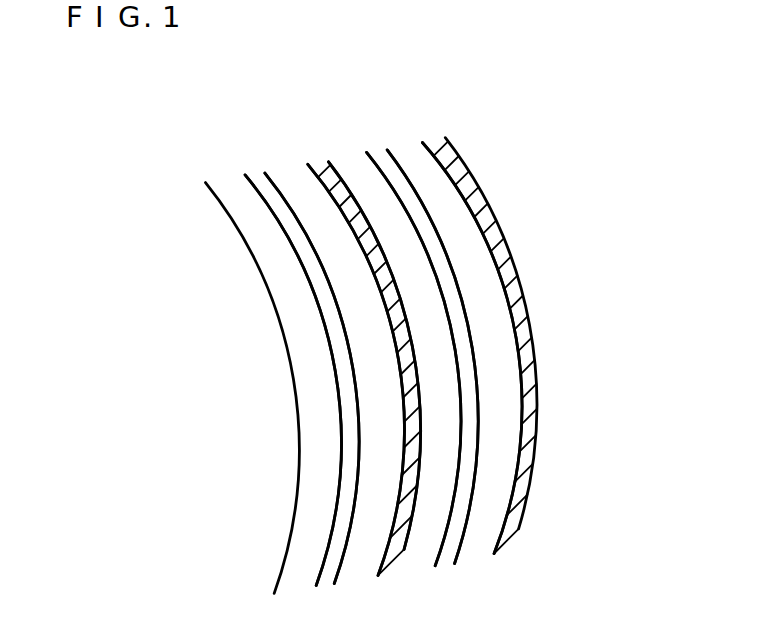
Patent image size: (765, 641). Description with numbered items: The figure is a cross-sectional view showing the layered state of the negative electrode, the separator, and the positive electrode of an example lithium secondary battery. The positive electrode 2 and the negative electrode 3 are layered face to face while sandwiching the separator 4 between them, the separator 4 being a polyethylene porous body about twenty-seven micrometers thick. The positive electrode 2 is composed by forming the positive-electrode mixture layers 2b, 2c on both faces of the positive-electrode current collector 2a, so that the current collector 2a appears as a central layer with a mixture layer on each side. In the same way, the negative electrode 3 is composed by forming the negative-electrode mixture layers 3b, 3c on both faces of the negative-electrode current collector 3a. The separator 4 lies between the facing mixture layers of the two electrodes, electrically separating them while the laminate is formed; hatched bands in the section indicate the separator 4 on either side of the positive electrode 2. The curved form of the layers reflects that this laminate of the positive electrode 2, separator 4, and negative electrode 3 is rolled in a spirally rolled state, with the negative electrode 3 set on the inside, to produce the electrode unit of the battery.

The positive electrode 2 is at (422, 133).
The positive-electrode current collector 2a is at (420, 223).
The positive-electrode mixture layer 2b is at (415, 279).
The positive-electrode mixture layer 2c is at (492, 332).
The negative electrode 3 is at (303, 155).
The negative-electrode current collector 3a is at (293, 229).
The negative-electrode mixture layer 3b is at (343, 282).
The negative-electrode mixture layer 3c is at (305, 357).
The separator 4 is at (322, 167).